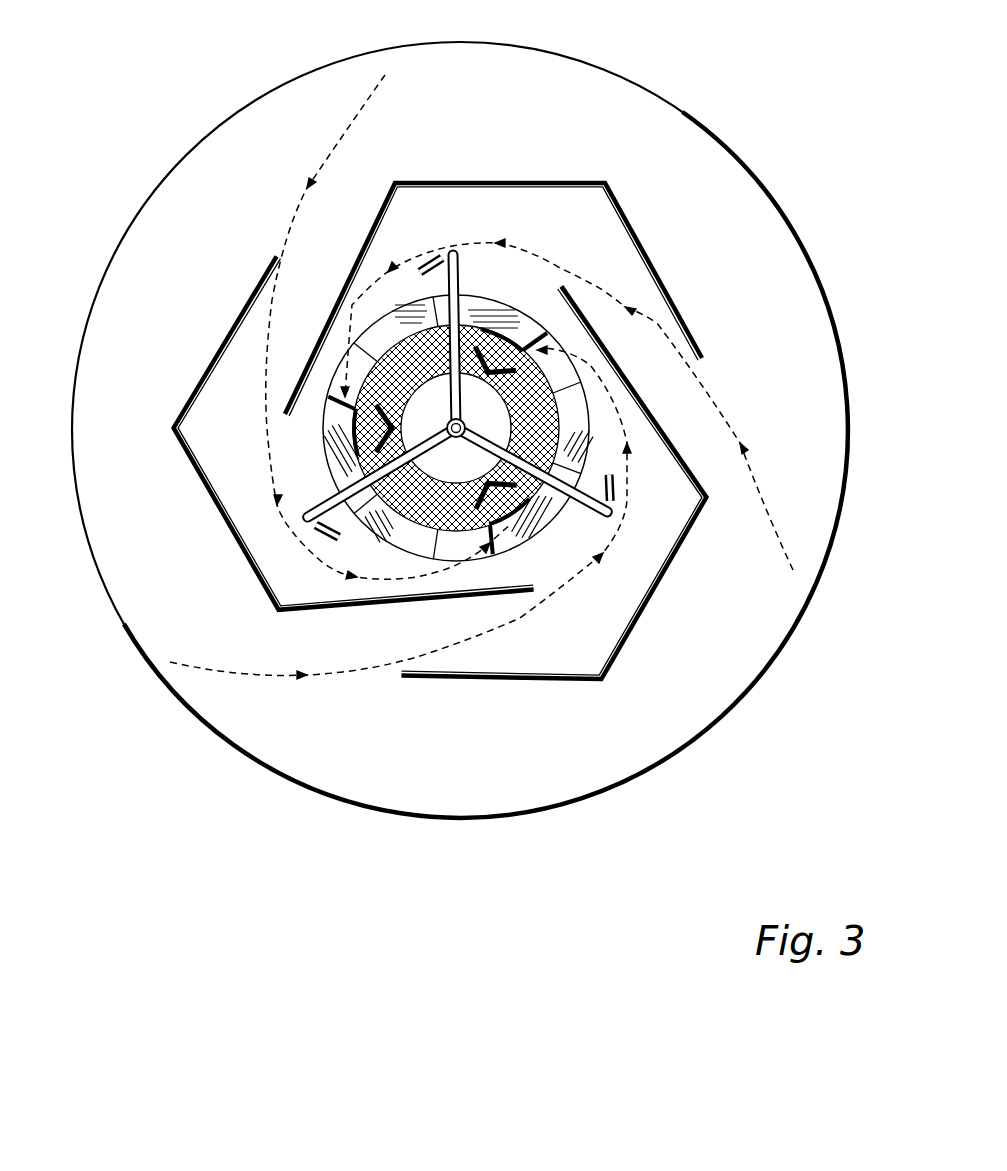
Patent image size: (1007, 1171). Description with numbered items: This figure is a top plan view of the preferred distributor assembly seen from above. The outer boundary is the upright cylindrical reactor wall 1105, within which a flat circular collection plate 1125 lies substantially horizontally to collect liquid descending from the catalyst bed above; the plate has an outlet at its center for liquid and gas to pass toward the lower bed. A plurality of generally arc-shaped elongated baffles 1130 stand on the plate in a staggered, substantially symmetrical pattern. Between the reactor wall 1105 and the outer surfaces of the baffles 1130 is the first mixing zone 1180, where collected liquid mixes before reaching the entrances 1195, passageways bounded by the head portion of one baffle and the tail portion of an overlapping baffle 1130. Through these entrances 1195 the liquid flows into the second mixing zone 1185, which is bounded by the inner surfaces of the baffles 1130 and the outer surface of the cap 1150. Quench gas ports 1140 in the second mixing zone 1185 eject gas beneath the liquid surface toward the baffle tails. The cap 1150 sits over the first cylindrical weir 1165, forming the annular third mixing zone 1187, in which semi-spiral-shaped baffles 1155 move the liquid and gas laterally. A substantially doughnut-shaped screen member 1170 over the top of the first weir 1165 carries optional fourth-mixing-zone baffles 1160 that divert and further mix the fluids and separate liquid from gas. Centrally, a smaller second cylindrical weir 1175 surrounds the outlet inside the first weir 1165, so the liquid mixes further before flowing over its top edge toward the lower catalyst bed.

The cylindrical reactor wall 1105 is at (712, 131).
The collection plate 1125 is at (343, 735).
The generally arc-shaped elongated baffle 1130 is at (473, 183).
The quench gas port 1140 is at (447, 258).
The cap 1150 is at (407, 340).
The semi-spiral-shaped baffle 1155 is at (483, 306).
The fourth-mixing-zone baffle 1160 is at (485, 330).
The first cylindrical weir 1165 is at (590, 446).
The substantially doughnut-shaped screen member 1170 is at (557, 397).
The second cylindrical weir 1175 is at (447, 429).
The first mixing zone 1180 is at (529, 110).
The second mixing zone 1185 is at (474, 220).
The third mixing zone 1187 is at (578, 437).
The entrance 1195 is at (454, 638).